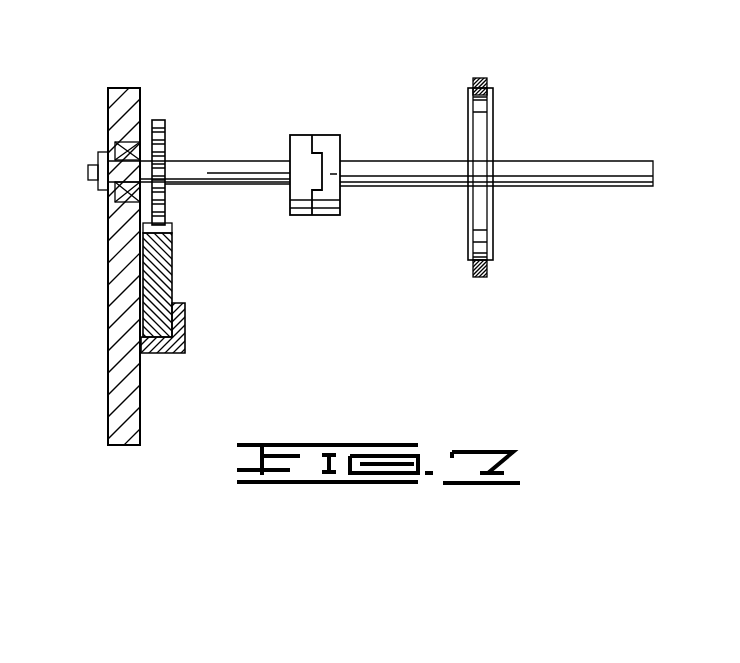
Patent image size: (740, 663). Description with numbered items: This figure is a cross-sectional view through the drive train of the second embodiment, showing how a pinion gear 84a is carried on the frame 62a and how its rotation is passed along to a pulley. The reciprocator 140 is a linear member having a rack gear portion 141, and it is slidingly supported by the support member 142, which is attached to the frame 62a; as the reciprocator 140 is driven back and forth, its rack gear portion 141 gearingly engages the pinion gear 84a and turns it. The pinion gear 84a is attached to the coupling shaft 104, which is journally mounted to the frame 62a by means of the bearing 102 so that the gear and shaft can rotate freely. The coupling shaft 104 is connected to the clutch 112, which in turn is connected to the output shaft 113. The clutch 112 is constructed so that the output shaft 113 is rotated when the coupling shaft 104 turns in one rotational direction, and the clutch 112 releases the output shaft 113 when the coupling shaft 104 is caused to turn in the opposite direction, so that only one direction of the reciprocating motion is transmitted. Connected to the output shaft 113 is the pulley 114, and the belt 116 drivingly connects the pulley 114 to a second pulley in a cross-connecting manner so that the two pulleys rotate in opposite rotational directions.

The frame 62a is at (116, 365).
The bearing 102 is at (101, 156).
The coupling shaft 104 is at (205, 181).
The pinion gear 84a is at (166, 131).
The rack gear portion 141 is at (173, 228).
The reciprocator 140 is at (160, 256).
The support member 142 is at (186, 331).
The clutch 112 is at (322, 140).
The output shaft 113 is at (371, 188).
The pulley 114 is at (494, 118).
The belt 116 is at (485, 80).